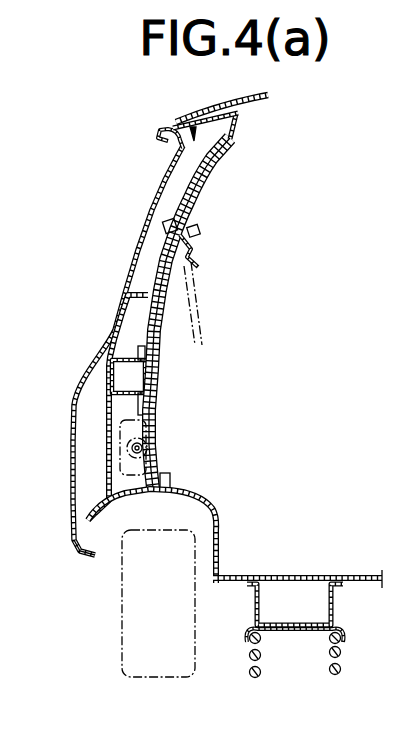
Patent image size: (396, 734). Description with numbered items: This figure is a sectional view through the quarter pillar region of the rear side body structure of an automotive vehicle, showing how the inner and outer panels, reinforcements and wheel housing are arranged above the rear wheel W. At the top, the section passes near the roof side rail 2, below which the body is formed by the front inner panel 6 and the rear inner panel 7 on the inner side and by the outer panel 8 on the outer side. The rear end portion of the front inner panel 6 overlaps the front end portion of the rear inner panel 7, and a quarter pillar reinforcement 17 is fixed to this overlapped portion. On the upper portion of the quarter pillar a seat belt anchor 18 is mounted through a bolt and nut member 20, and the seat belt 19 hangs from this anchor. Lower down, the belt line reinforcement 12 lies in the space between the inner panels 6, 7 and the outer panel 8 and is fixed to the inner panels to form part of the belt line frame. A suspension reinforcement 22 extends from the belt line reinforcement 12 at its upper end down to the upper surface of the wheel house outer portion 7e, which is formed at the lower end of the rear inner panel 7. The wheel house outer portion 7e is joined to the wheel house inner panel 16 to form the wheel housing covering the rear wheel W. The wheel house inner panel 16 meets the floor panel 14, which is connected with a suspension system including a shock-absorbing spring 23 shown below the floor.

The roof side rail 2 is at (185, 118).
The front inner panel 6 is at (232, 134).
The rear inner panel 7 is at (217, 170).
The wheel house outer portion 7e is at (80, 536).
The outer panel 8 is at (122, 250).
The belt line reinforcement 12 is at (125, 400).
The floor panel 14 is at (296, 574).
The wheel house inner panel 16 is at (218, 532).
The quarter pillar reinforcement 17 is at (155, 267).
The seat belt anchor 18 is at (192, 256).
The seat belt 19 is at (201, 342).
The bolt and nut member 20 is at (170, 218).
The suspension reinforcement 22 is at (102, 445).
The spring 23 is at (341, 668).
The rear wheel W is at (122, 617).